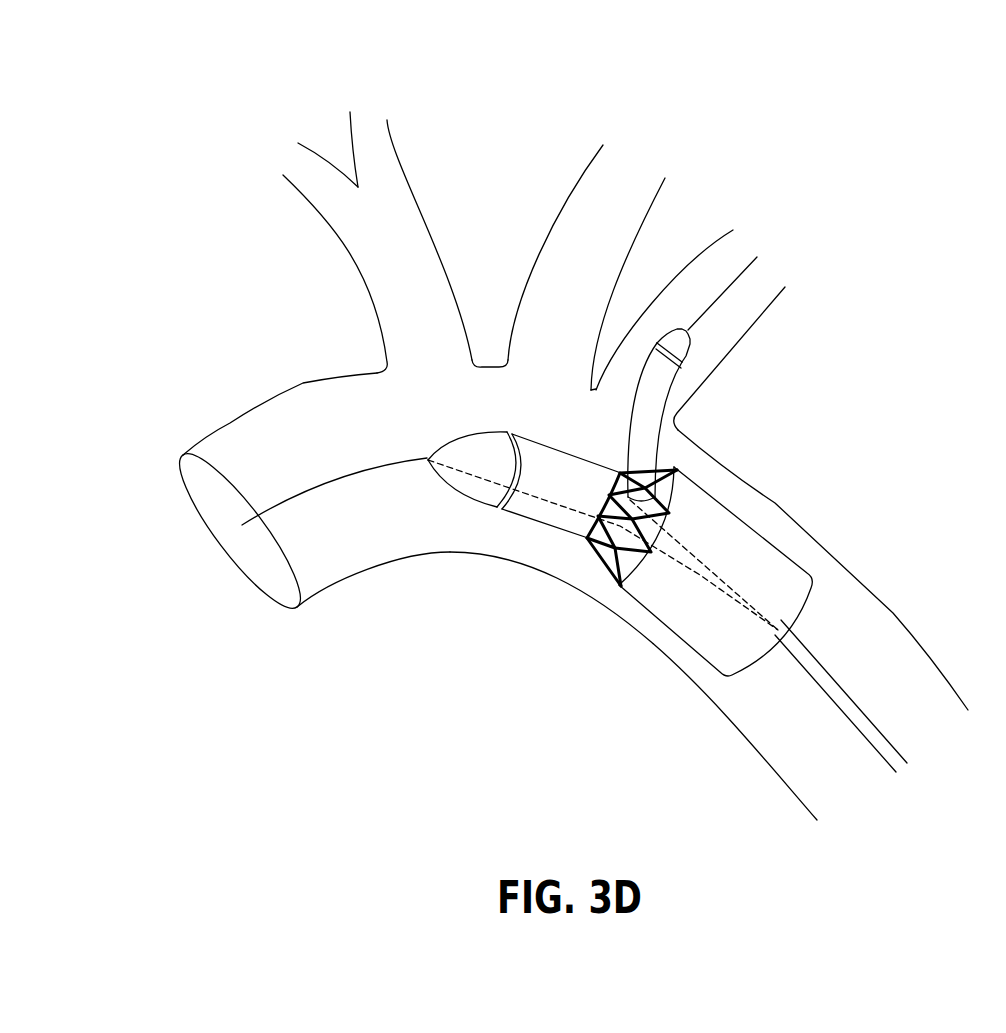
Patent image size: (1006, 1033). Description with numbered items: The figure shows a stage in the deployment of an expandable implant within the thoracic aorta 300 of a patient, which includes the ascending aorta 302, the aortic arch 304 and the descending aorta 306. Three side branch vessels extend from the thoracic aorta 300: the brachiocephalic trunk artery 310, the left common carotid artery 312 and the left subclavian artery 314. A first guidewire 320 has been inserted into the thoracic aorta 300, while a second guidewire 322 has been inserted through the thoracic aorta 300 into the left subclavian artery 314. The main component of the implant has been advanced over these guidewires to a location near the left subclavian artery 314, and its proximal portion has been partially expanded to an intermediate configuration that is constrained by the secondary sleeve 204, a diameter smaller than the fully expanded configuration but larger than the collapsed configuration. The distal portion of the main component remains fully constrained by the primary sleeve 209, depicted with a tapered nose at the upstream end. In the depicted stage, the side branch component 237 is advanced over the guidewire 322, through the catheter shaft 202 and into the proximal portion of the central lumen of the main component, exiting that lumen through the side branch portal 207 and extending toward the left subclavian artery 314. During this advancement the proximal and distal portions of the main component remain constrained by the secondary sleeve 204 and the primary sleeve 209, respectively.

The thoracic aorta 300 is at (205, 188).
The brachiocephalic trunk artery 310 is at (377, 313).
The left common carotid artery 312 is at (552, 232).
The left subclavian artery 314 is at (758, 312).
The guidewire 320 is at (300, 485).
The ascending aorta 302 is at (323, 592).
The aortic arch 304 is at (557, 580).
The descending aorta 306 is at (727, 720).
The guidewire 322 is at (713, 310).
The side branch component 237 is at (657, 387).
The primary sleeve 209 is at (527, 500).
The side branch portal 207 is at (610, 553).
The secondary sleeve 204 is at (702, 600).
The catheter shaft 202 is at (847, 685).